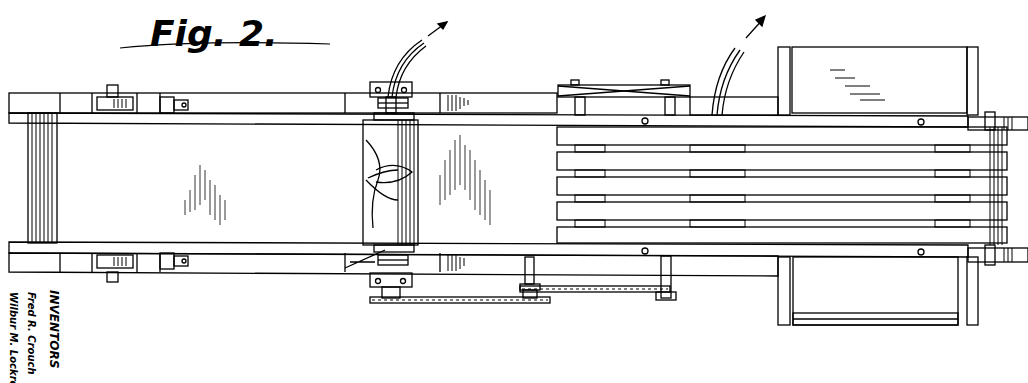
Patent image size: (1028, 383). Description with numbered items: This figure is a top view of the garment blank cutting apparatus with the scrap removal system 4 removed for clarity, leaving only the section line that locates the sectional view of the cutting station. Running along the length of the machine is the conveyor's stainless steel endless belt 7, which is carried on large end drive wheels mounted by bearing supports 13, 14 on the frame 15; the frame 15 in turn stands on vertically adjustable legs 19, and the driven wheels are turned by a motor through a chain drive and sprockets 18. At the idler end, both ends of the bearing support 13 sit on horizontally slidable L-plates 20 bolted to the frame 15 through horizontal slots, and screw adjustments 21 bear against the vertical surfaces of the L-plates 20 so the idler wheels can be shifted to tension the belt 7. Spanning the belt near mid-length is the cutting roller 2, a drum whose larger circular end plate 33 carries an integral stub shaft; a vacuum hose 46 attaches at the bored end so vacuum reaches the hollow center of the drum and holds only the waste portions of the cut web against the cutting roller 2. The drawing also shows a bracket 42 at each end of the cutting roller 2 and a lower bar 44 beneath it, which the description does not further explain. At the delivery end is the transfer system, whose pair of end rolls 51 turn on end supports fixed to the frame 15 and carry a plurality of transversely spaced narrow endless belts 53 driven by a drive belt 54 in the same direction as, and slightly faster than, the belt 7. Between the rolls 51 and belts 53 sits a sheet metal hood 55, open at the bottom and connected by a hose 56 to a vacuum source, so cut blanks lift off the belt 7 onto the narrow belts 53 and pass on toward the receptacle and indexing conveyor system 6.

The cutting roller 2 is at (365, 170).
The scrap removal system 4 is at (335, 193).
The receptacle and indexing conveyor system 6 is at (925, 306).
The endless belt 7 is at (110, 186).
The bearing support 13 is at (45, 146).
The bearing support 14 is at (660, 264).
The frame 15 is at (268, 107).
The chain drive and sprockets 18 is at (667, 292).
The vertically adjustable legs 19 is at (670, 108).
The L-plates 20 is at (150, 107).
The screw adjustments 21 is at (182, 100).
The end plate 33 is at (363, 246).
The bracket 42 is at (410, 82).
The lower bar 44 is at (466, 303).
The vacuum hose 46 is at (414, 56).
The end rolls 51 is at (556, 170).
The endless belts 53 is at (878, 188).
The drive belt 54 is at (592, 88).
The sheet metal hood 55 is at (370, 268).
The hose 56 is at (735, 52).